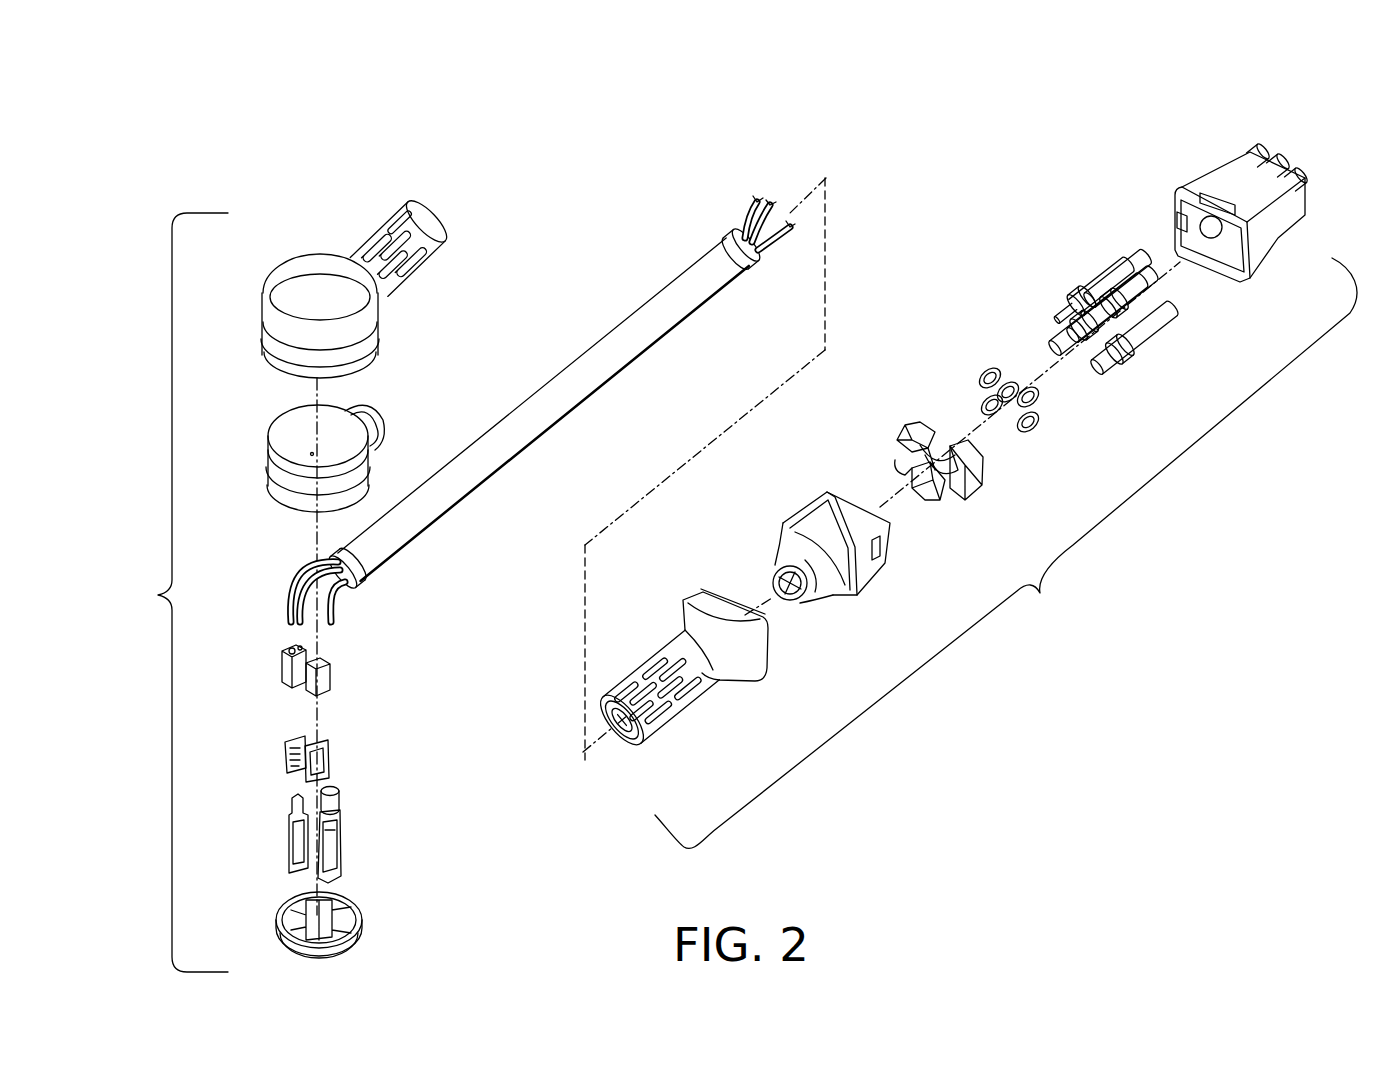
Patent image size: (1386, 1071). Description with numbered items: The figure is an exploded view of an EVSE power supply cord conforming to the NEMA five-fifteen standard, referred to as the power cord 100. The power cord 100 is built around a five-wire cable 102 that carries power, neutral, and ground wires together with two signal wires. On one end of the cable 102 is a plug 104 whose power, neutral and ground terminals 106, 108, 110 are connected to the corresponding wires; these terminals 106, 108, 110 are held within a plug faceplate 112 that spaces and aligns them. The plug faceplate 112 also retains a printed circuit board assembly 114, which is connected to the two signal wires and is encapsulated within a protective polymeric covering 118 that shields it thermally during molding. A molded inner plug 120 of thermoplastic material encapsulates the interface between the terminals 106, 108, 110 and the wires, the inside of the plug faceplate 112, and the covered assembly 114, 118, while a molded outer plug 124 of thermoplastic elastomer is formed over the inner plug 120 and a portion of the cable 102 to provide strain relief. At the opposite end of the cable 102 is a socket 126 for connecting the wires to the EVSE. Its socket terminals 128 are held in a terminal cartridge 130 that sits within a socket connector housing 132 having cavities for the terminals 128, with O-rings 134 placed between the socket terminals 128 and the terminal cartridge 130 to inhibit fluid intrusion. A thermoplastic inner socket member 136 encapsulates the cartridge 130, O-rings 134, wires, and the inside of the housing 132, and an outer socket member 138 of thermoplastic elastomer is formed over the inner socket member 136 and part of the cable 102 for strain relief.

The power cord 100 is at (423, 123).
The five-wire cable 102 is at (603, 355).
The plug 104 is at (282, 583).
The power terminal 106 is at (342, 838).
The neutral terminal 108 is at (248, 833).
The ground terminal 110 is at (340, 797).
The plug faceplate 112 is at (285, 904).
The printed circuit board assembly 114 is at (288, 738).
The protective polymeric covering 118 is at (292, 644).
The molded inner plug 120 is at (298, 420).
The molded outer plug 124 is at (307, 273).
The socket 126 is at (975, 494).
The socket terminals 128 is at (1052, 290).
The terminal cartridge 130 is at (912, 430).
The socket connector housing 132 is at (1215, 185).
The O-rings 134 is at (968, 376).
The inner socket member 136 is at (820, 500).
The outer socket member 138 is at (690, 595).